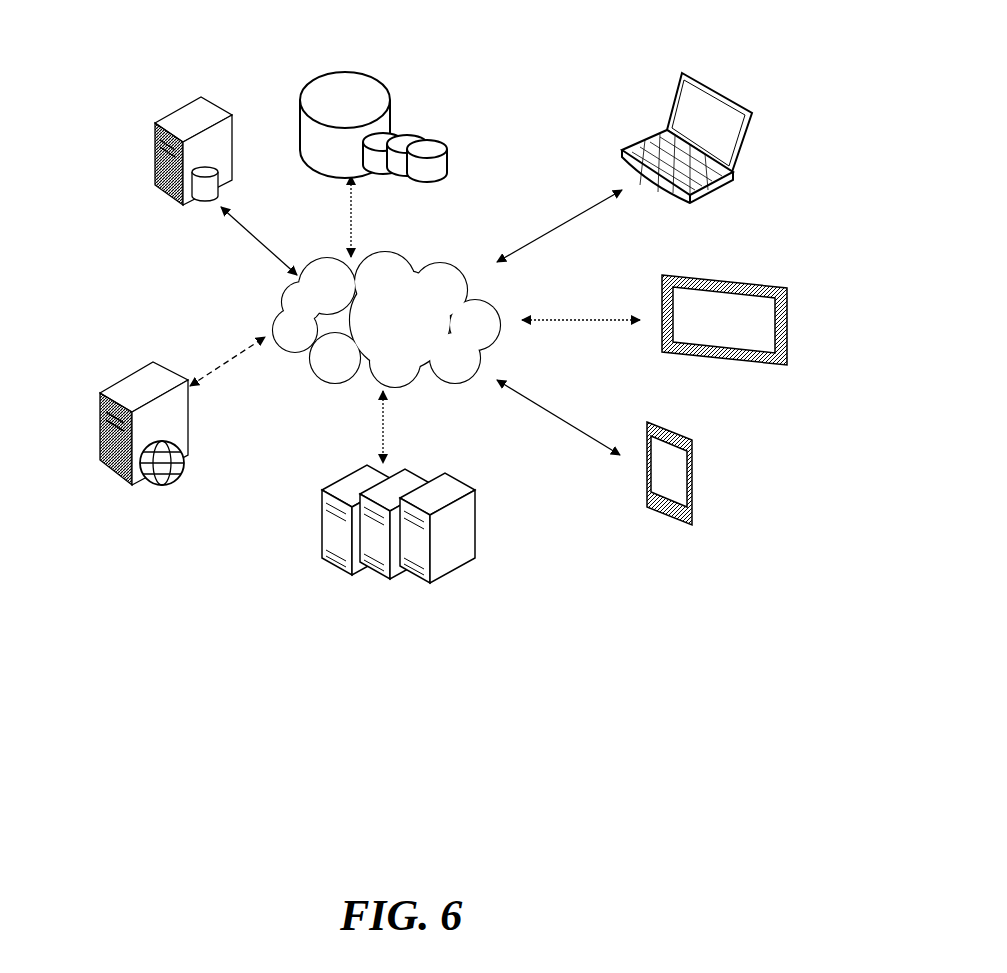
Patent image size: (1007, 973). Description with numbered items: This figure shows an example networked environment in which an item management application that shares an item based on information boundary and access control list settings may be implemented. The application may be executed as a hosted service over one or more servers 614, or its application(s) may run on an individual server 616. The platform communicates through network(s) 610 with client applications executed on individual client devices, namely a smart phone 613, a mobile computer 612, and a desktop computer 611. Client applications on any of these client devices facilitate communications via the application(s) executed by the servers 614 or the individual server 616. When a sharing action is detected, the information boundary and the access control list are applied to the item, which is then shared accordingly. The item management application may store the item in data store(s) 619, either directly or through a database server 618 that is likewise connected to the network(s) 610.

The network(s) 610 is at (390, 242).
The desktop computer 611 is at (724, 72).
The mobile computer 612 is at (760, 257).
The smart phone 613 is at (702, 435).
The servers 614 is at (348, 470).
The individual server 616 is at (122, 375).
The database server 618 is at (195, 215).
The data store(s) 619 is at (362, 50).